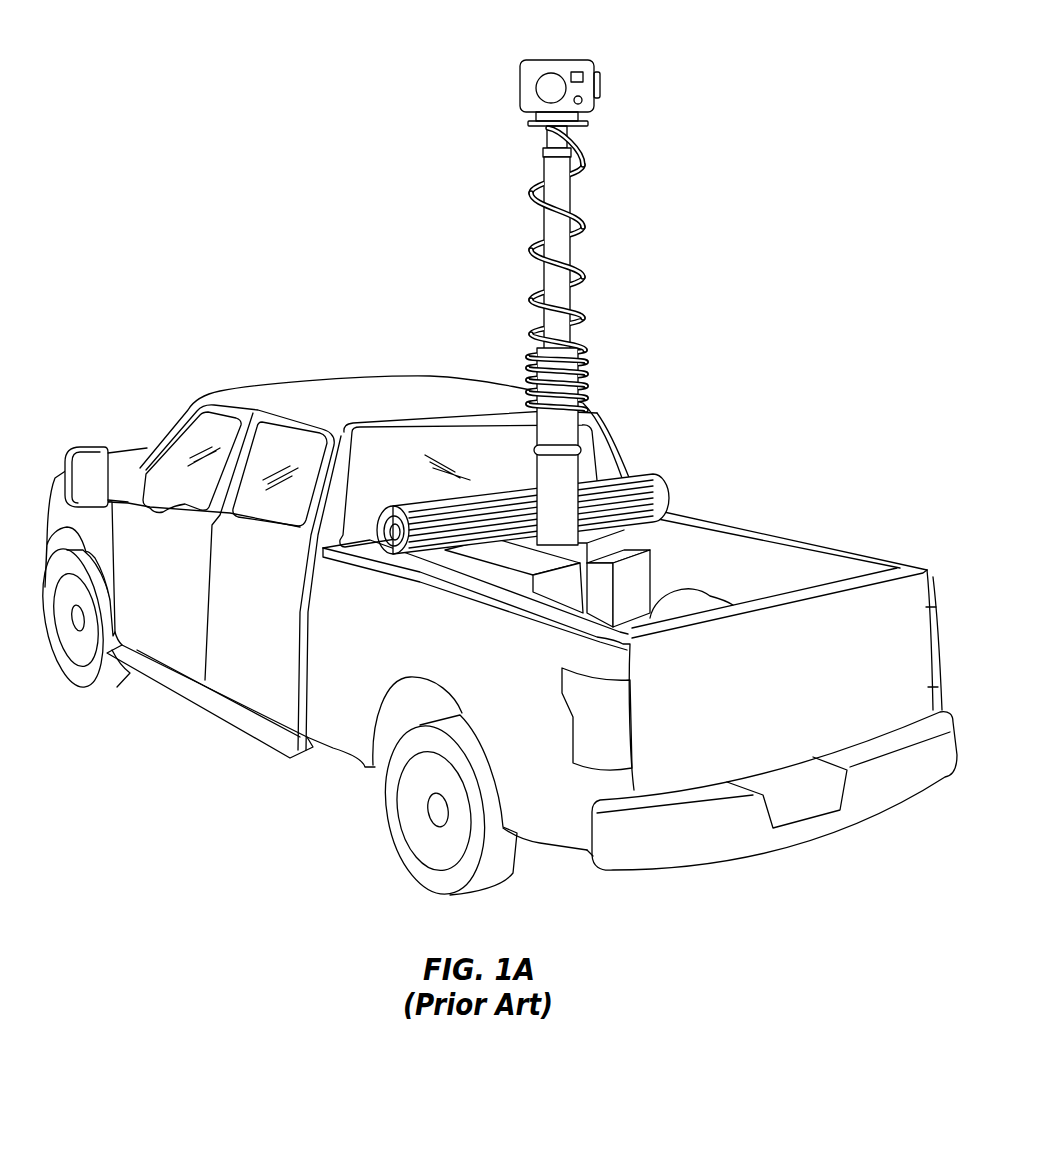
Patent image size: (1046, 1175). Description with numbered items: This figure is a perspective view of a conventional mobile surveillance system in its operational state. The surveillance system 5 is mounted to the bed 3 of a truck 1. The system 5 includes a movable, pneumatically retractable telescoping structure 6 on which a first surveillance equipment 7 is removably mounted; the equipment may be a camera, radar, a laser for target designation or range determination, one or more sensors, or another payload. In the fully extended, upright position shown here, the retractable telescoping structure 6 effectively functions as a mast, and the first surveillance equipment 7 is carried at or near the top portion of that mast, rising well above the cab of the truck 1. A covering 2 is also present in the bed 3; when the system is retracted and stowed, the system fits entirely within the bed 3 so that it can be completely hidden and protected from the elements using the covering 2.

The truck 1 is at (308, 379).
The covering 2 is at (640, 488).
The bed 3 is at (773, 570).
The surveillance system 5 is at (591, 281).
The retractable telescoping structure 6 is at (582, 252).
The first surveillance equipment 7 is at (565, 60).